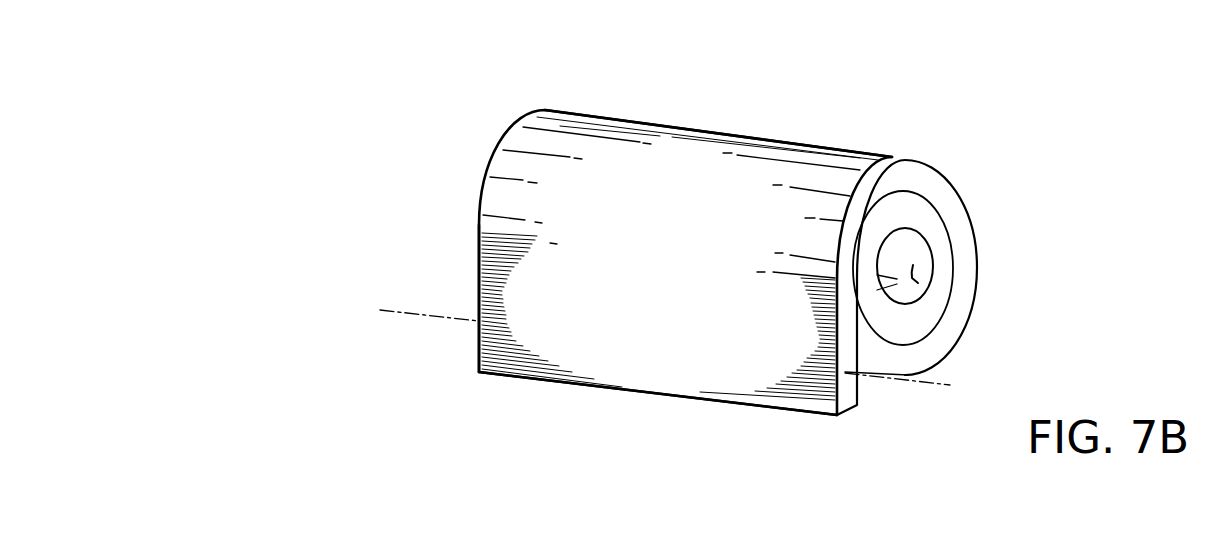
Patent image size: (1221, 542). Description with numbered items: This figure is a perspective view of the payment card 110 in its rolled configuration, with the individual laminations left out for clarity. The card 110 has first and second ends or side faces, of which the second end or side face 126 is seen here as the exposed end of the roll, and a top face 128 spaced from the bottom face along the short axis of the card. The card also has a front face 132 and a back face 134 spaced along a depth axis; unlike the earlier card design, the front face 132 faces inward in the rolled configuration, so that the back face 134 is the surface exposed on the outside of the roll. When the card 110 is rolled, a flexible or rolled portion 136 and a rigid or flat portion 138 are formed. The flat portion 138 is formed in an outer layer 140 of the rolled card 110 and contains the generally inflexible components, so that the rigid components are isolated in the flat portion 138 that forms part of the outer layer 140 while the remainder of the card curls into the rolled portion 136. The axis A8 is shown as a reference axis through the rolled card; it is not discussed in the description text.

The payment card 110 is at (902, 126).
The second end or side face 126 is at (910, 256).
The top face 128 is at (836, 388).
The front face 132 is at (918, 282).
The back face 134 is at (688, 352).
The flexible or rolled portion 136 is at (916, 179).
The rigid or flat portion 138 is at (585, 347).
The outer layer 140 is at (853, 233).
The longitudinal axis A8 is at (649, 340).